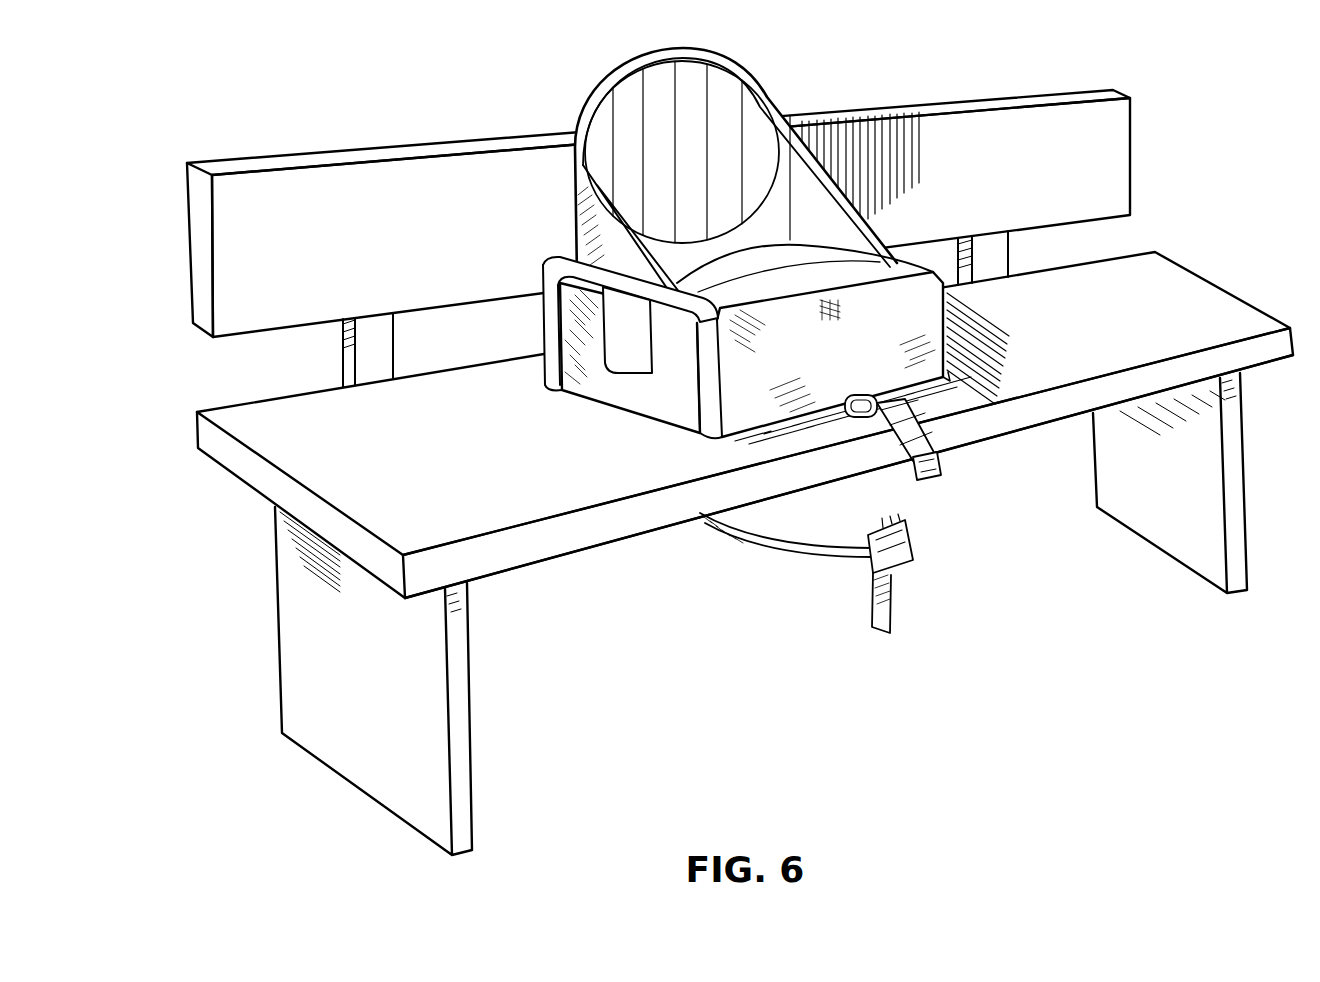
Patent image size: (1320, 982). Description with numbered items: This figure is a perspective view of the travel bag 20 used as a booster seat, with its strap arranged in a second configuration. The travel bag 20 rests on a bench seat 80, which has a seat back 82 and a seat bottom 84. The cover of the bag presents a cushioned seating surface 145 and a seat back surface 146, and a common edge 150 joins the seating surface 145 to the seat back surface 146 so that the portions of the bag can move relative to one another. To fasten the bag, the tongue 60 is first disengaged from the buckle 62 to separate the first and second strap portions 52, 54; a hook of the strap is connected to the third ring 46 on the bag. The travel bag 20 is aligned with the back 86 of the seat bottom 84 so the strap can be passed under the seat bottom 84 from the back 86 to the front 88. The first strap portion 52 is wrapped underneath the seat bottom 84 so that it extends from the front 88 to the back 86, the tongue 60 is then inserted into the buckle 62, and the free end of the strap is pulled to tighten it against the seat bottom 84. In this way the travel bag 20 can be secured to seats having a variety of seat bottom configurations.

The travel bag 20 is at (716, 340).
The third ring 46 is at (807, 395).
The first strap portion 52 is at (780, 543).
The second strap portion 54 is at (882, 433).
The tongue 60 is at (913, 530).
The buckle 62 is at (923, 477).
The bench seat 80 is at (727, 472).
The seat back 82 is at (1120, 177).
The seat bottom 84 is at (1210, 297).
The back of the seat bottom 86 is at (232, 403).
The front of the seat bottom 88 is at (538, 557).
The cushioned seating surface 145 is at (863, 270).
The seat back surface 146 is at (750, 107).
The common edge 150 is at (710, 260).